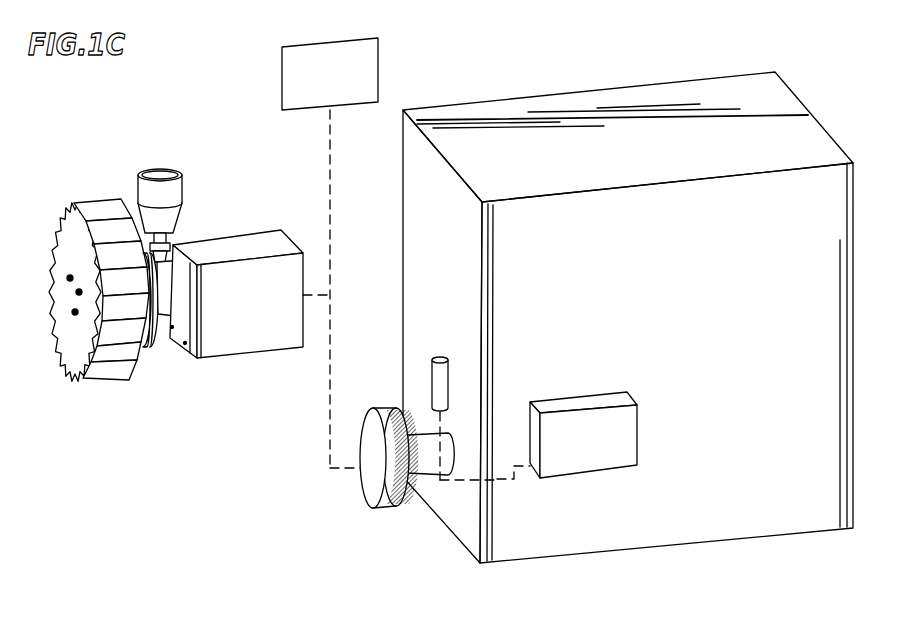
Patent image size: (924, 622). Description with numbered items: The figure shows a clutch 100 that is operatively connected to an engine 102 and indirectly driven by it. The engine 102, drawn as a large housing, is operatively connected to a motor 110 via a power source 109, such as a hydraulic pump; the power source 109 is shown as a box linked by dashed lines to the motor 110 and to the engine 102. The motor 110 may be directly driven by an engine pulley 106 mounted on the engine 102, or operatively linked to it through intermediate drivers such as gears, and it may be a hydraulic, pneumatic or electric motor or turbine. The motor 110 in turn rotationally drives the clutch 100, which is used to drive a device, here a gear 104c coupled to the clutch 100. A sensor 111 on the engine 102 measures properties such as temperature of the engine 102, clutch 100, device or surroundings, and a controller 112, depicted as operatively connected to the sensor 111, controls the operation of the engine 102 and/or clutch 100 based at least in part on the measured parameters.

The clutch 100 is at (148, 250).
The engine 102 is at (725, 90).
The gear 104c is at (77, 352).
The engine pulley 106 is at (378, 487).
The power source 109 is at (330, 253).
The motor 110 is at (246, 354).
The sensor 111 is at (449, 368).
The controller 112 is at (627, 470).